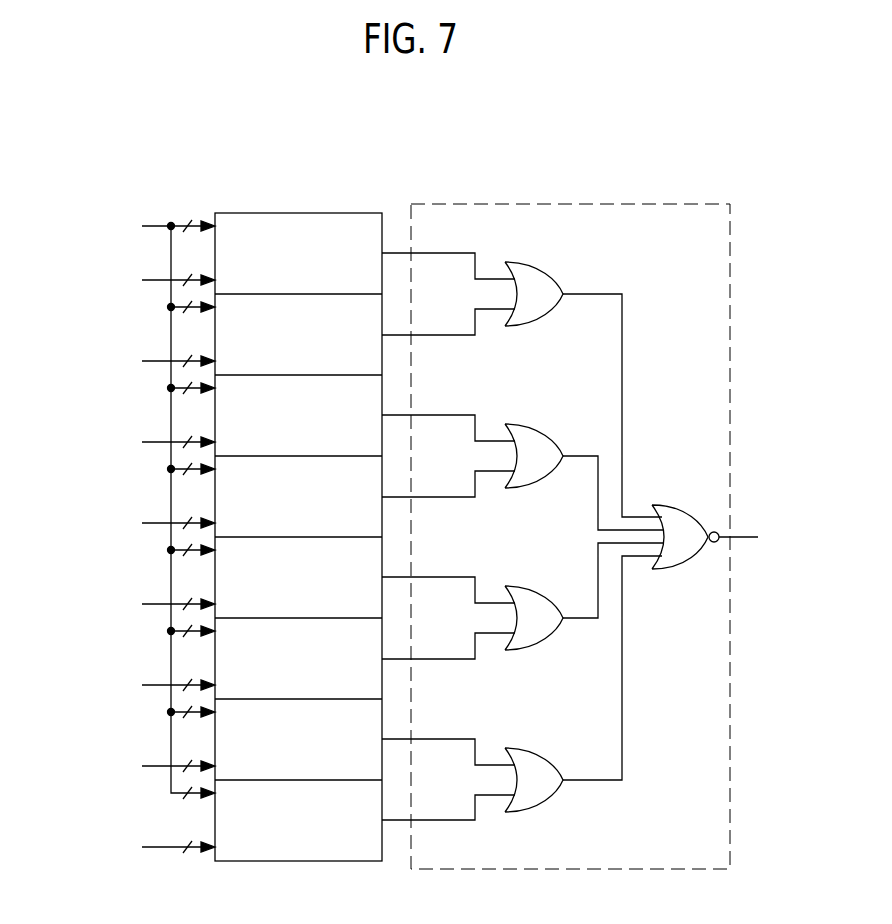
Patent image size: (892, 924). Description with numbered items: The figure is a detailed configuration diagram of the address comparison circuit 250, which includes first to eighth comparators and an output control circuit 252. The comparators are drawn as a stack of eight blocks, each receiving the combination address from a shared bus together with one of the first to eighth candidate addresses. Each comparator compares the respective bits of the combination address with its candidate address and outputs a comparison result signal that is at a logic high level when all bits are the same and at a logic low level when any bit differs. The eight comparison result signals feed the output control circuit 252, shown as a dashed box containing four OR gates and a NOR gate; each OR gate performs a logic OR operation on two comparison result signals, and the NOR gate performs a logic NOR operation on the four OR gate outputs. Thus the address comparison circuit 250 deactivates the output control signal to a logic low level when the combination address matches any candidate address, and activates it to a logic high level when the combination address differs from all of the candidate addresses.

The address comparison circuit 250 is at (118, 146).
The output control circuit 252 is at (588, 204).